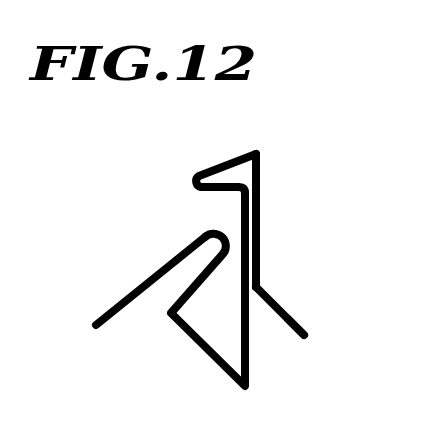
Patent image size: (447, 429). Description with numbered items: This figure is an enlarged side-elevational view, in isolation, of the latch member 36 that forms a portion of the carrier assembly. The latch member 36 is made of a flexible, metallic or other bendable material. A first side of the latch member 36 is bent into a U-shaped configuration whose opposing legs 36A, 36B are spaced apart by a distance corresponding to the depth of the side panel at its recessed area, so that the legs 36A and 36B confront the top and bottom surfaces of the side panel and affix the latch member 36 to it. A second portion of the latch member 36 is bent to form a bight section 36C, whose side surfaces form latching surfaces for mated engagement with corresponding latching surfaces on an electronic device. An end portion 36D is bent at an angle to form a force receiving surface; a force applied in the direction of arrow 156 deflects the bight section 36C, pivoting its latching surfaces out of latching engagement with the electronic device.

The latch member 36 is at (295, 124).
The leg 36A is at (133, 294).
The leg 36B is at (196, 286).
The bight section 36C is at (218, 163).
The end portion 36D is at (286, 325).
The arrow 156 is at (297, 320).